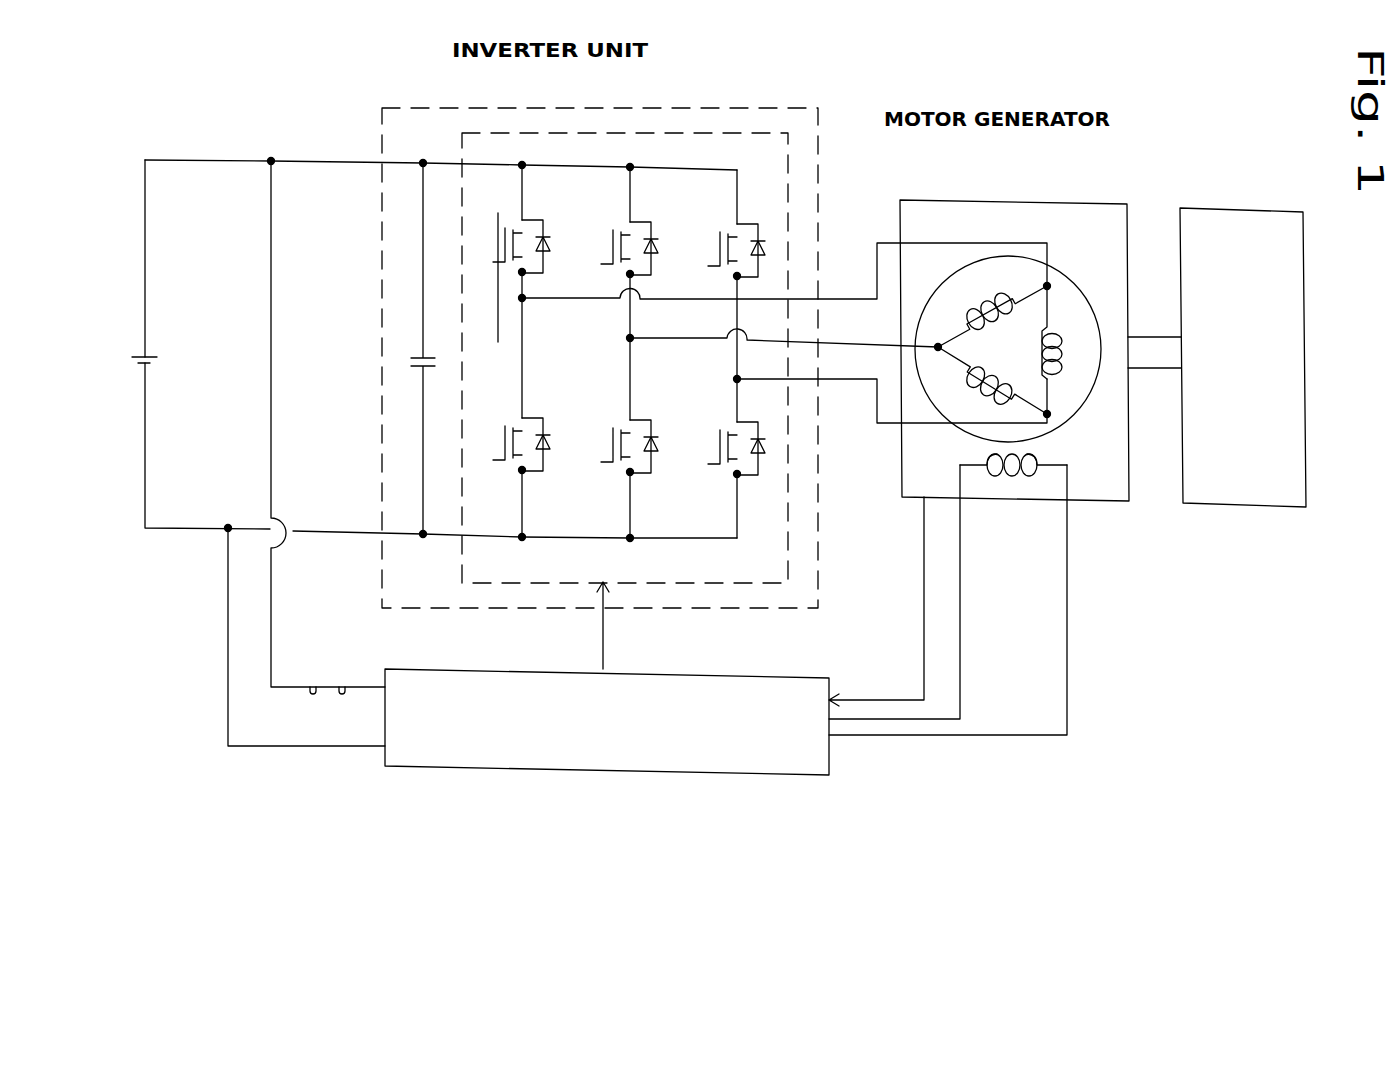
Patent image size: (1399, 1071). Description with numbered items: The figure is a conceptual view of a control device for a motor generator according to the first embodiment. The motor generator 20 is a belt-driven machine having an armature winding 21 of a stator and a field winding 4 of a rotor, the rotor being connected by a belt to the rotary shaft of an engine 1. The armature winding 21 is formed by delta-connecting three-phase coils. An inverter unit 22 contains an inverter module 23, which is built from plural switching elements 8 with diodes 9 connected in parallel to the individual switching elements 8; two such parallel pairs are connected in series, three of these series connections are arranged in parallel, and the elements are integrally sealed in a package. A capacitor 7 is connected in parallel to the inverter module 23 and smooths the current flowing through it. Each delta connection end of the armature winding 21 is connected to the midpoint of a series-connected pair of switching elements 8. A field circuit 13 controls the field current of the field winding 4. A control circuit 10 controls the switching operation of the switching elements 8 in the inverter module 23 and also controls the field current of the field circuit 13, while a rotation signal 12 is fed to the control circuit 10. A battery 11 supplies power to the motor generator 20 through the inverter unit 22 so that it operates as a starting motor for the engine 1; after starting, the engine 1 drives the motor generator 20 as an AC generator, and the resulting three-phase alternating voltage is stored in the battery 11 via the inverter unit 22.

The engine 1 is at (1197, 208).
The field winding 4 is at (1028, 480).
The capacitor 7 is at (415, 352).
The switching element 8 is at (506, 416).
The diode 9 is at (563, 442).
The control circuit 10 is at (775, 778).
The battery 11 is at (140, 352).
The rotation signal 12 is at (922, 622).
The field circuit 13 is at (1070, 625).
The motor generator 20 is at (930, 200).
The armature winding 21 is at (1062, 357).
The inverter unit 22 is at (458, 107).
The inverter module 23 is at (740, 134).